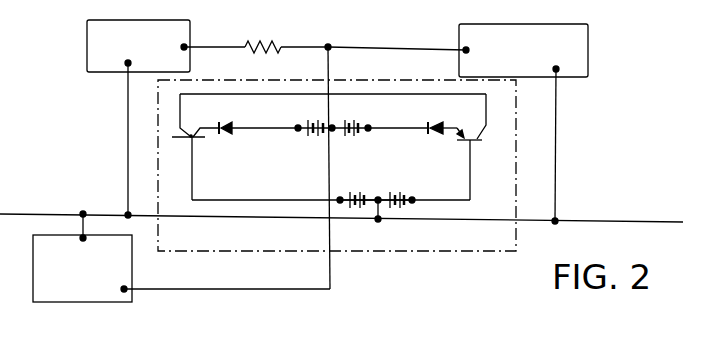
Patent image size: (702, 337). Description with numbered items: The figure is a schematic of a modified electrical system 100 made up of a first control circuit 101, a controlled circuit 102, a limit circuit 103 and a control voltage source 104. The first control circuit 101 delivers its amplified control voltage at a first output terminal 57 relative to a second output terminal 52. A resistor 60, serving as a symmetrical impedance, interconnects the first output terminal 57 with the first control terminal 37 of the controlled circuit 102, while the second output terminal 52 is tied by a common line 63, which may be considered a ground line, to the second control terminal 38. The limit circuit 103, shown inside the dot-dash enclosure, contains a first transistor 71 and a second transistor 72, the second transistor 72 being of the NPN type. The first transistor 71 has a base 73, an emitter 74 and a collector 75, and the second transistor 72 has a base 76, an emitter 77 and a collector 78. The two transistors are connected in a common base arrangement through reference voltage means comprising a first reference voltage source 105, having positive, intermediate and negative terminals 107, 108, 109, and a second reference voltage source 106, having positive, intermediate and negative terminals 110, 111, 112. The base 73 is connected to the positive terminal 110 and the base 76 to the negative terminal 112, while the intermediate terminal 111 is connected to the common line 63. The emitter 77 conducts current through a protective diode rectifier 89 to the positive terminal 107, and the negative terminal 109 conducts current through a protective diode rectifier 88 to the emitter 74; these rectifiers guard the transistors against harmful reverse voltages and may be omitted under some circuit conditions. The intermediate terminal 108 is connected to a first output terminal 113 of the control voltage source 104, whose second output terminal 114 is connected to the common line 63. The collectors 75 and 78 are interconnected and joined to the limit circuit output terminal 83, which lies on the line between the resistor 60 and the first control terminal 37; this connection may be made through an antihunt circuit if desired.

The first control terminal 37 is at (464, 48).
The second control terminal 38 is at (557, 72).
The second output terminal 52 is at (126, 65).
The first output terminal 57 is at (186, 46).
The resistor 60 is at (265, 42).
The common line 63 is at (126, 212).
The first transistor 71 is at (199, 134).
The second transistor 72 is at (465, 142).
The base electrode 73 is at (186, 139).
The emitter electrode 74 is at (191, 131).
The collector electrode 75 is at (179, 131).
The base electrode 76 is at (471, 159).
The emitter electrode 77 is at (464, 136).
The collector electrode 78 is at (481, 132).
The limit circuit output terminal 83 is at (328, 45).
The protective diode rectifier 88 is at (227, 122).
The protective diode rectifier 89 is at (450, 118).
The modified electrical system 100 is at (381, 32).
The first control circuit 101 is at (190, 26).
The controlled circuit 102 is at (498, 79).
The limit circuit 103 is at (362, 79).
The control voltage source 104 is at (86, 303).
The first reference voltage source 105 is at (335, 127).
The second reference voltage source 106 is at (366, 193).
The positive terminal 107 is at (370, 125).
The intermediate terminal 108 is at (341, 123).
The negative terminal 109 is at (309, 121).
The positive terminal 110 is at (341, 197).
The intermediate terminal 111 is at (377, 222).
The negative terminal 112 is at (413, 197).
The first output terminal 113 is at (127, 291).
The second output terminal 114 is at (80, 236).